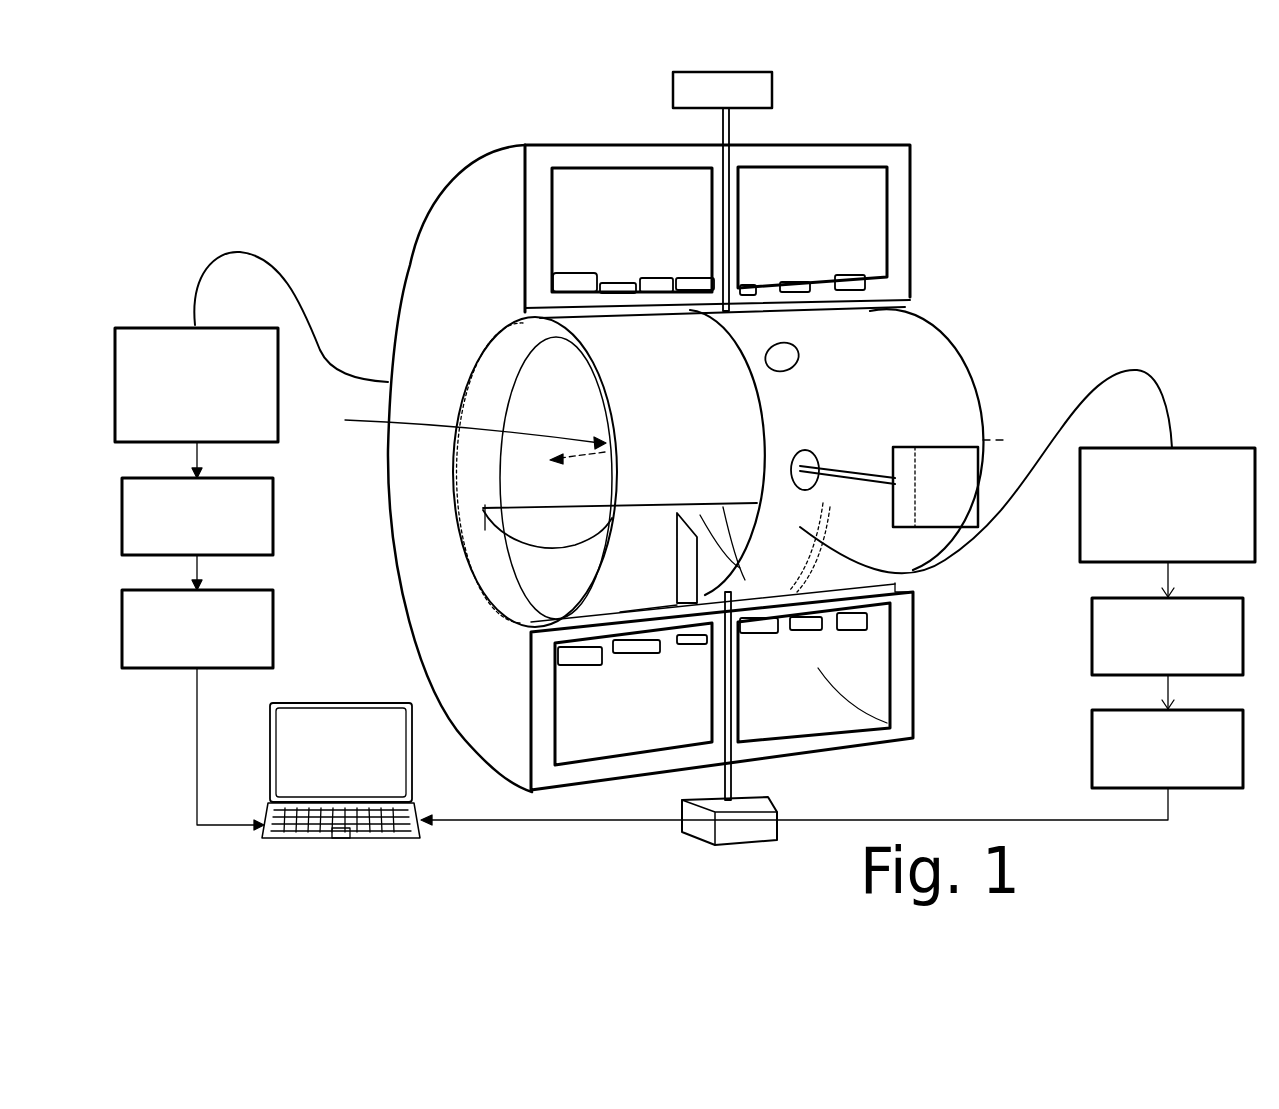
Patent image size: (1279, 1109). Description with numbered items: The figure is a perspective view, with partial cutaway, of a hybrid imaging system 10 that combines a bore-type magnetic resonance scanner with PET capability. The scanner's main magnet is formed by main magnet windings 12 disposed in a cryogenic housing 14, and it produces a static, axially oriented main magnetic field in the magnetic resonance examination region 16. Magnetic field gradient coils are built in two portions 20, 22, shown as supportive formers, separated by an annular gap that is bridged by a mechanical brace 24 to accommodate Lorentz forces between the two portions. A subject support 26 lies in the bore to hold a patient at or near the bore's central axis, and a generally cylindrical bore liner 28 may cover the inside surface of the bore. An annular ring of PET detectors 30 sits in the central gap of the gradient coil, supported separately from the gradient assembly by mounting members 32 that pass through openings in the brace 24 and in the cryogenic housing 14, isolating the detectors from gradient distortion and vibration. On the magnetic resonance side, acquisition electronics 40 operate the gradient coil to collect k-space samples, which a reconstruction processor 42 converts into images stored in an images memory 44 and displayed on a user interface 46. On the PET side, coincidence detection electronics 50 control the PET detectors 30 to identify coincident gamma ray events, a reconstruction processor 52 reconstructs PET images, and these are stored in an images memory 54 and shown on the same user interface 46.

The imaging system 10 is at (290, 169).
The main magnet windings 12 is at (697, 277).
The cryogenic housing 14 is at (430, 305).
The magnetic resonance examination region 16 is at (458, 450).
The magnetic field gradient coil portion 20 is at (670, 395).
The magnetic field gradient coil portion 22 is at (883, 380).
The mechanical brace 24 is at (772, 418).
The subject support 26 is at (537, 565).
The bore liner 28 is at (547, 387).
The PET detectors 30 is at (777, 527).
The mounting members 32 is at (727, 128).
The acquisition electronics 40 is at (280, 385).
The reconstruction processor 42 is at (275, 520).
The images memory 44 is at (275, 632).
The user interface 46 is at (410, 778).
The coincidence detection electronics 50 is at (1080, 512).
The reconstruction processor 52 is at (1092, 645).
The images memory 54 is at (1092, 748).